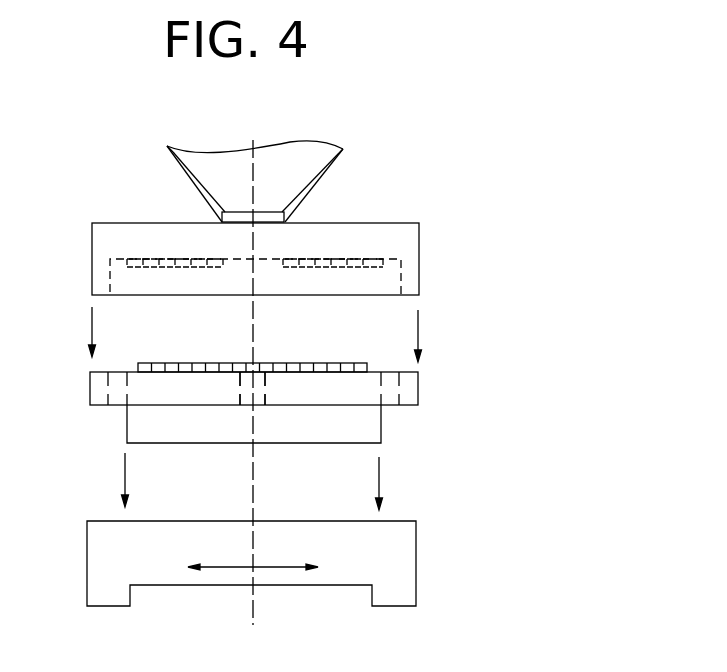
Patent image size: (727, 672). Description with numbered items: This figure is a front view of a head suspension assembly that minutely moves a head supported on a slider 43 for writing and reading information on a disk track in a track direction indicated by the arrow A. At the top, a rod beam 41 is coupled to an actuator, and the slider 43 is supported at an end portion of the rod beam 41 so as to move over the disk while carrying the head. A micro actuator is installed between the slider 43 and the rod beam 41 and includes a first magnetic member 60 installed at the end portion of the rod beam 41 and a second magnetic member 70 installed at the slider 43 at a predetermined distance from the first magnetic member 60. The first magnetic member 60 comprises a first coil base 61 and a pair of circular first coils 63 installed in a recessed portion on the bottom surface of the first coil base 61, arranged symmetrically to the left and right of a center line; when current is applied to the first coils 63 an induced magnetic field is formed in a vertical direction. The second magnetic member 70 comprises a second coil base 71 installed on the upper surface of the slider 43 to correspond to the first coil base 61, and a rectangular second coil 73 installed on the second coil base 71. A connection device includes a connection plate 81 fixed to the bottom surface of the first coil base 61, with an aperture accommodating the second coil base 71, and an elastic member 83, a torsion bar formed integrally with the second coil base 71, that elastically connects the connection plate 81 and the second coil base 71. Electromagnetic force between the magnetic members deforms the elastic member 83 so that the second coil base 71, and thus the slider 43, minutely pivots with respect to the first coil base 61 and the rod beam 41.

The rod beam 41 is at (317, 193).
The first magnetic member 60 is at (316, 249).
The first coil base 61 is at (419, 262).
The first coils 63 is at (150, 267).
The second magnetic member 70 is at (278, 417).
The second coil base 71 is at (381, 437).
The second coil 73 is at (292, 363).
The connection plate 81 is at (418, 393).
The elastic member 83 is at (240, 398).
The slider 43 is at (416, 572).